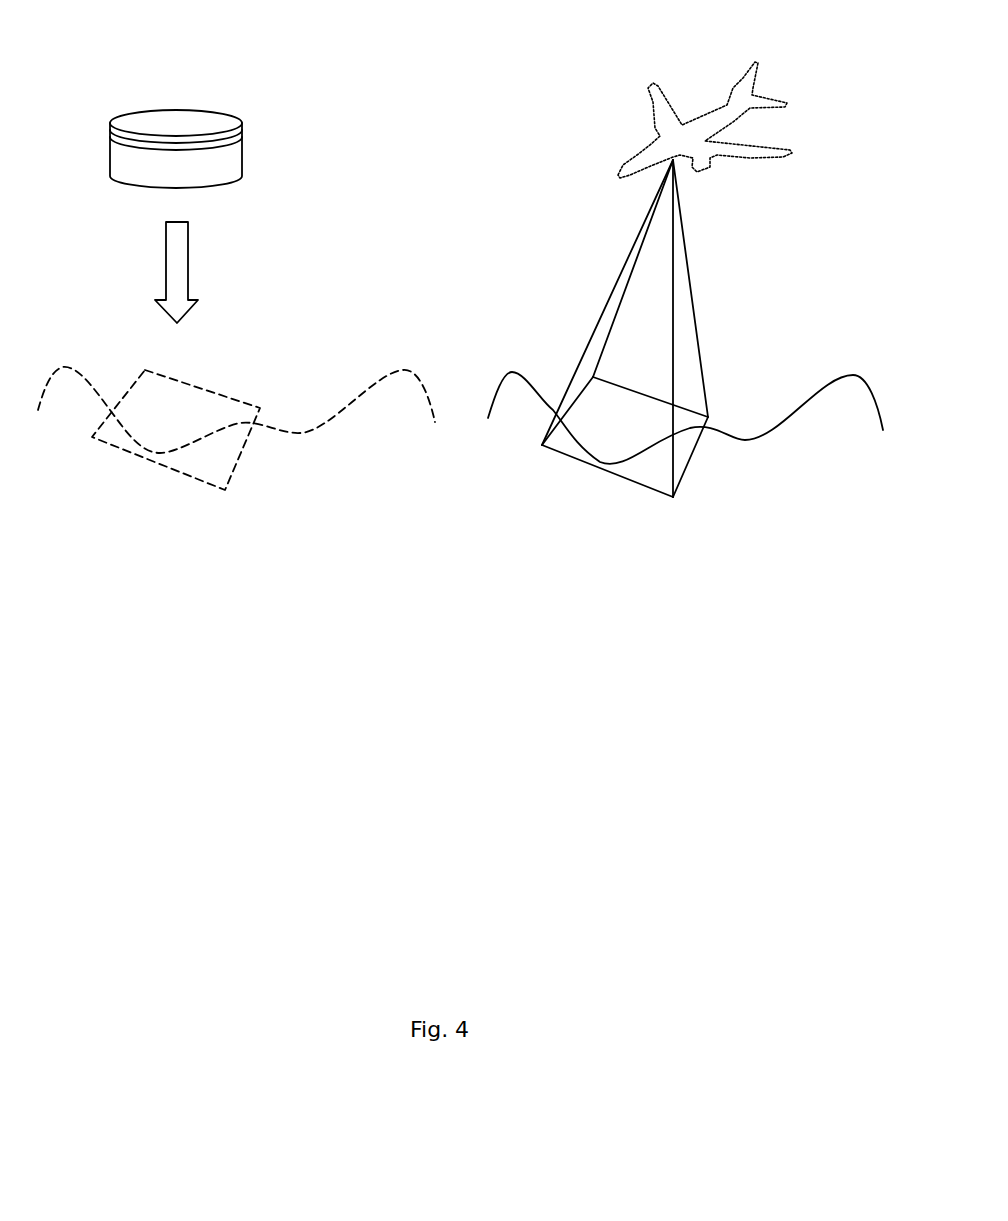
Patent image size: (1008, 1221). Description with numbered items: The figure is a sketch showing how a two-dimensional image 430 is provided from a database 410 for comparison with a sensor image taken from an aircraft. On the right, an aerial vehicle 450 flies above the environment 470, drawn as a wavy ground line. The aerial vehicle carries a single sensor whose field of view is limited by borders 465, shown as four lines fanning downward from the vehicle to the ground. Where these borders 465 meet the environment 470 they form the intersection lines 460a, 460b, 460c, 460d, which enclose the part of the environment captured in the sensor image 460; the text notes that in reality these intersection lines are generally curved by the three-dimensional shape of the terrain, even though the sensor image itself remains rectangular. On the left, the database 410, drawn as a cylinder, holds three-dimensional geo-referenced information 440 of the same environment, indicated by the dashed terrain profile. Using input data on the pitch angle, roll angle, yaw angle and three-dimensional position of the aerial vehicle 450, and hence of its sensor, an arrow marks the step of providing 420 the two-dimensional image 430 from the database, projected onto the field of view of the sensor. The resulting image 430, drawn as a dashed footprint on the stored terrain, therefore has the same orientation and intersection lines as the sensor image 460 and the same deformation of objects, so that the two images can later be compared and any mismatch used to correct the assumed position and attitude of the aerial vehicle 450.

The database 410 is at (243, 157).
The providing step 420 is at (189, 287).
The two-dimensional image 430 is at (187, 417).
The three-dimensional geo-referenced information 440 is at (403, 370).
The aerial vehicle 450 is at (743, 73).
The sensor image 460 is at (670, 424).
The intersection line 460a is at (622, 388).
The intersection line 460b is at (685, 472).
The intersection line 460c is at (623, 479).
The intersection line 460d is at (540, 392).
The field of view borders 465 is at (638, 256).
The environment 470 is at (655, 328).